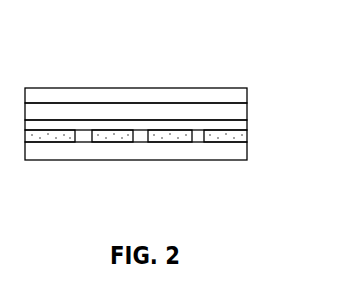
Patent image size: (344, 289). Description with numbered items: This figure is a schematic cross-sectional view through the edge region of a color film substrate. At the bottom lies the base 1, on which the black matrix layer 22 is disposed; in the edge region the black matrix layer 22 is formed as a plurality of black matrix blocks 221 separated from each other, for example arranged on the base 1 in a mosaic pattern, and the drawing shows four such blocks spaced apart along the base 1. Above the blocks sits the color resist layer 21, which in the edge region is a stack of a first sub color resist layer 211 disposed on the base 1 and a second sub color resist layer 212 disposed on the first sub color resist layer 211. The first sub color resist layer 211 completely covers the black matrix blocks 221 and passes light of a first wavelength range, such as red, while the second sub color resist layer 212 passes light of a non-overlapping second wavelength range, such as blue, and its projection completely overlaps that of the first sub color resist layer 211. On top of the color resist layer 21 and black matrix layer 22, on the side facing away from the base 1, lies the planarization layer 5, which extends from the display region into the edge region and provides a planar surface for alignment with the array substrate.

The base 1 is at (229, 150).
The planarization layer 5 is at (230, 97).
The color resist layer 21 is at (136, 79).
The first sub color resist layer 211 is at (81, 57).
The second sub color resist layer 212 is at (93, 108).
The black matrix layer 22 is at (136, 182).
The black matrix blocks 221 is at (188, 203).